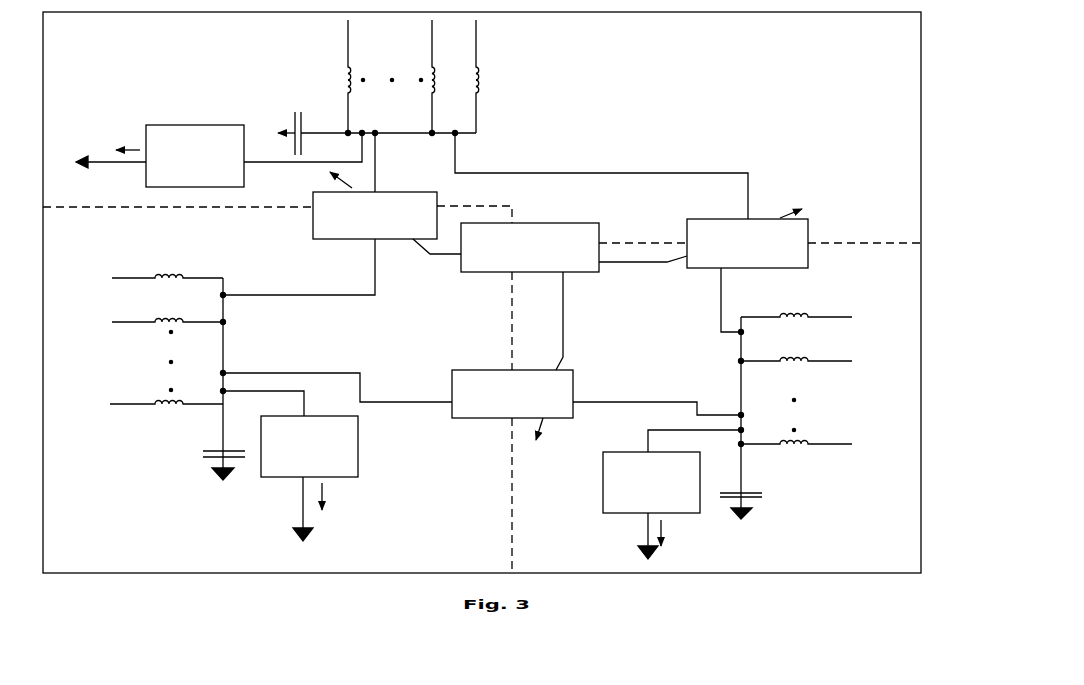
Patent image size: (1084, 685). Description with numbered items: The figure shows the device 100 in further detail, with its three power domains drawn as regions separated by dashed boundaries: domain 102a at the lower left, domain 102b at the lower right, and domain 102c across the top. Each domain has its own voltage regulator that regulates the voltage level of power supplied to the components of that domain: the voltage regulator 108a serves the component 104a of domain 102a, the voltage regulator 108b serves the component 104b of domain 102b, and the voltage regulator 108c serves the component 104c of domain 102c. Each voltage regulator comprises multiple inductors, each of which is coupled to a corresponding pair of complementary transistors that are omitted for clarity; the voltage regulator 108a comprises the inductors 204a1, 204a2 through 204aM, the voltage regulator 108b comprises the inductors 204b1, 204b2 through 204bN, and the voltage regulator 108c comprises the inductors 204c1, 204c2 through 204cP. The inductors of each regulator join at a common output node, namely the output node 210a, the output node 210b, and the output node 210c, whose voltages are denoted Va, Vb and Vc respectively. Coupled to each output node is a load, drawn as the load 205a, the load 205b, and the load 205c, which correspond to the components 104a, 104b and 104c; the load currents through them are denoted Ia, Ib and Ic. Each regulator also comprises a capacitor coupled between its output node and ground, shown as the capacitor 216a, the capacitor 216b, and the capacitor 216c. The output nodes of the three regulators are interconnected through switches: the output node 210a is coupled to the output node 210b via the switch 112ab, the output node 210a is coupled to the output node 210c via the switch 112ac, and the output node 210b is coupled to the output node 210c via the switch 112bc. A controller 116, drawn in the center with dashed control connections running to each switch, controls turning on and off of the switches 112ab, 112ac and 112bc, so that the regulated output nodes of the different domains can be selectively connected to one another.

The device 100 is at (924, 75).
The domain 102a is at (152, 247).
The domain 102b is at (918, 267).
The domain 102c is at (891, 44).
The component 104a is at (309, 478).
The component 104b is at (651, 505).
The component 104c is at (219, 156).
The voltage regulator 108a is at (106, 481).
The voltage regulator 108b is at (872, 517).
The voltage regulator 108c is at (544, 77).
The switch 112ab is at (482, 405).
The switch 112ac is at (342, 233).
The switch 112bc is at (631, 232).
The controller 116 is at (574, 296).
The inductor 204a1 is at (167, 267).
The inductor 204a2 is at (167, 310).
The inductor 204aM is at (166, 413).
The inductor 204b1 is at (796, 305).
The inductor 204b2 is at (796, 349).
The inductor 204bN is at (796, 454).
The inductor 204c1 is at (498, 76).
The inductor 204c2 is at (410, 76).
The inductor 204cP is at (327, 76).
The load 205a is at (309, 478).
The load 205b is at (651, 505).
The load 205c is at (219, 156).
The output node 210a is at (225, 372).
The output node 210b is at (742, 412).
The output node 210c is at (378, 137).
The capacitor 216a is at (201, 464).
The capacitor 216b is at (762, 503).
The capacitor 216c is at (313, 124).